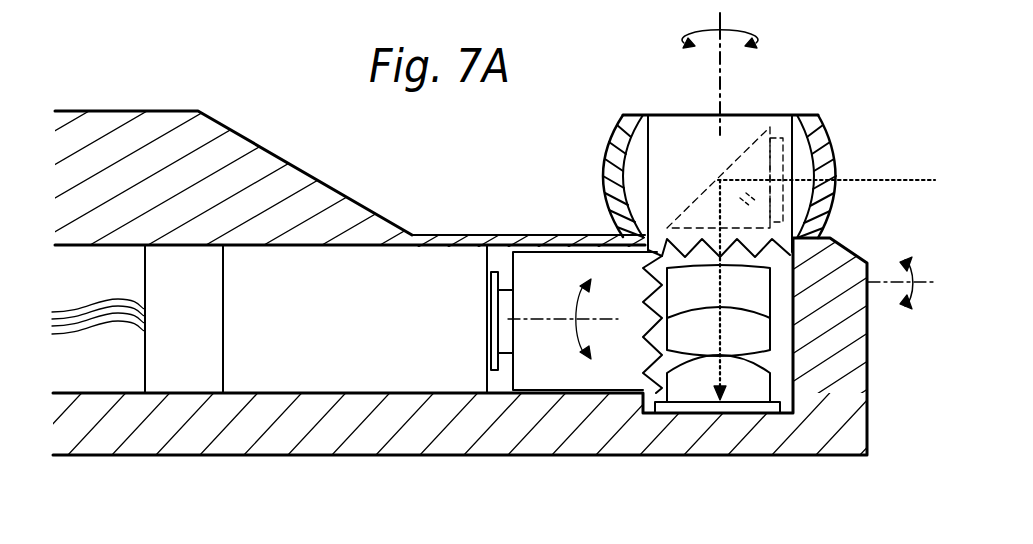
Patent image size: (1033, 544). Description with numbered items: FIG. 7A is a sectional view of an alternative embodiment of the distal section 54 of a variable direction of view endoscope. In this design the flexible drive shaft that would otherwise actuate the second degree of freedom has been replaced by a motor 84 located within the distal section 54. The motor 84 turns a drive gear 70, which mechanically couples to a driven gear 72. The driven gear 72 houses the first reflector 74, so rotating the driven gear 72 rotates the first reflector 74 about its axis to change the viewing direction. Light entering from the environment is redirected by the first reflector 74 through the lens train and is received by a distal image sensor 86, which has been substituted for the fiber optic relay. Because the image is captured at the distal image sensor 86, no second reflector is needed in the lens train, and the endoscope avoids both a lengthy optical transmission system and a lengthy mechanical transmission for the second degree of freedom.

The distal section 54 is at (338, 442).
The drive gear 70 is at (547, 263).
The driven gear 72 is at (675, 123).
The first reflector 74 is at (692, 208).
The motor 84 is at (440, 260).
The distal image sensor 86 is at (745, 410).